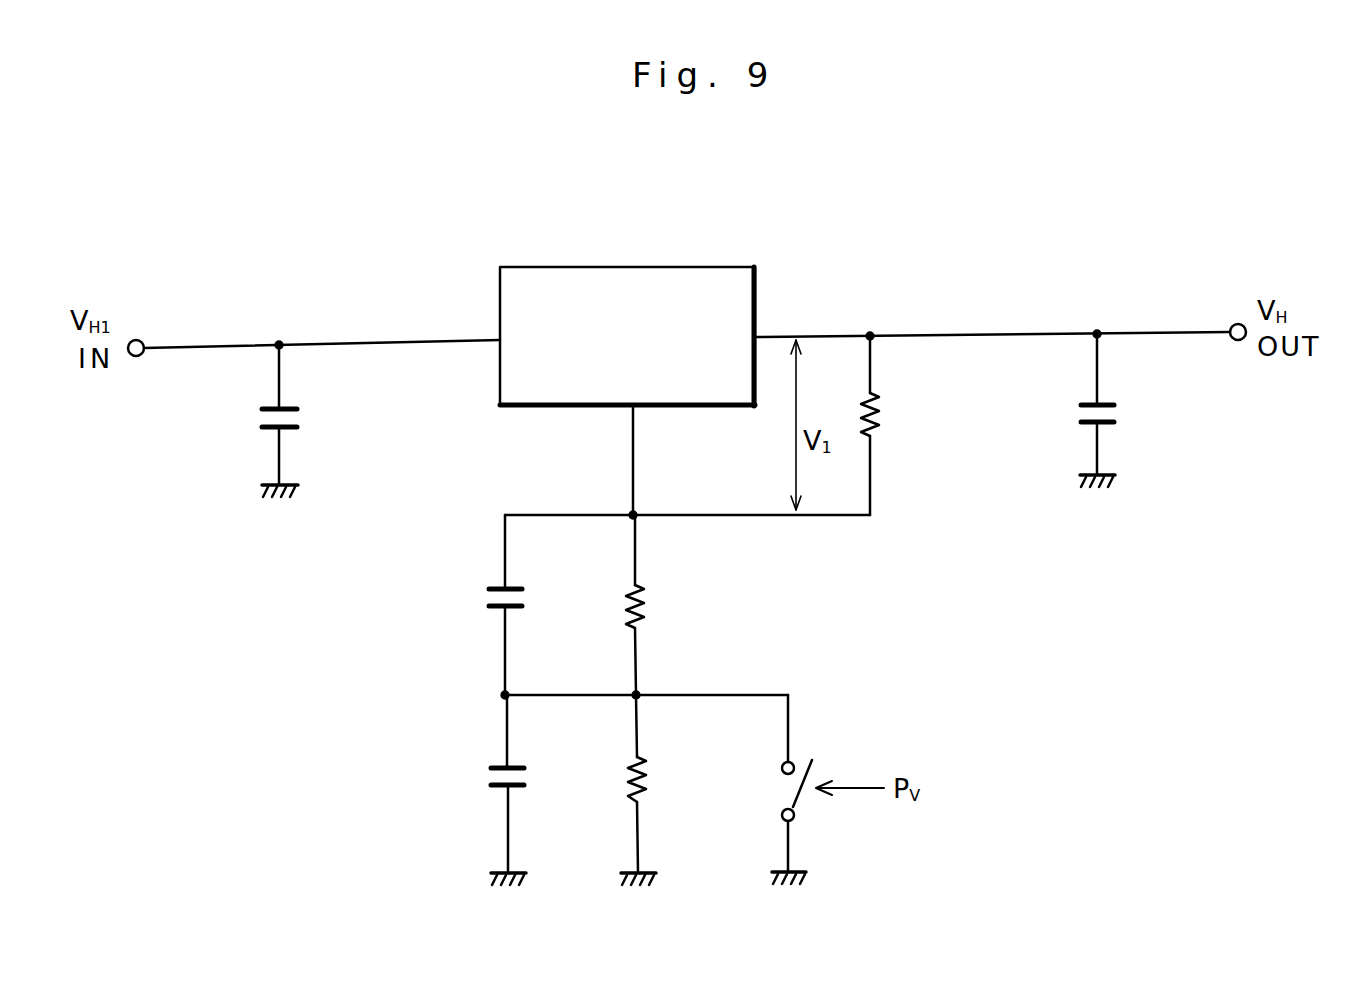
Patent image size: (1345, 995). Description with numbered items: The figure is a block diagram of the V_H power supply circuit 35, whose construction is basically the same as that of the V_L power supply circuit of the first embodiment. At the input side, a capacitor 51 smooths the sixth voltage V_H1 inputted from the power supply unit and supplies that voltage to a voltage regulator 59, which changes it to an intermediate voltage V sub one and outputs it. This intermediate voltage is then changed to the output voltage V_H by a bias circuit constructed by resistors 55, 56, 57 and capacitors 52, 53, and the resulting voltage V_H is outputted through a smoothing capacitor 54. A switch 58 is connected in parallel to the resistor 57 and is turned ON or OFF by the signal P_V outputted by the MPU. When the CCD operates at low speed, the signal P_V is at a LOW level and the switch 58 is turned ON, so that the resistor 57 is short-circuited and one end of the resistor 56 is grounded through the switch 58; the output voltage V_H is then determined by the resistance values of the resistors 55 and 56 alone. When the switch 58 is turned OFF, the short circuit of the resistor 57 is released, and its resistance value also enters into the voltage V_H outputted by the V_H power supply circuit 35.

The V_H power supply circuit 35 is at (1064, 276).
The capacitor 51 is at (262, 426).
The capacitor 52 is at (490, 598).
The capacitor 53 is at (490, 778).
The smoothing capacitor 54 is at (1118, 412).
The resistor 55 is at (878, 393).
The resistor 56 is at (648, 598).
The resistor 57 is at (650, 760).
The switch 58 is at (790, 790).
The voltage regulator 59 is at (638, 274).